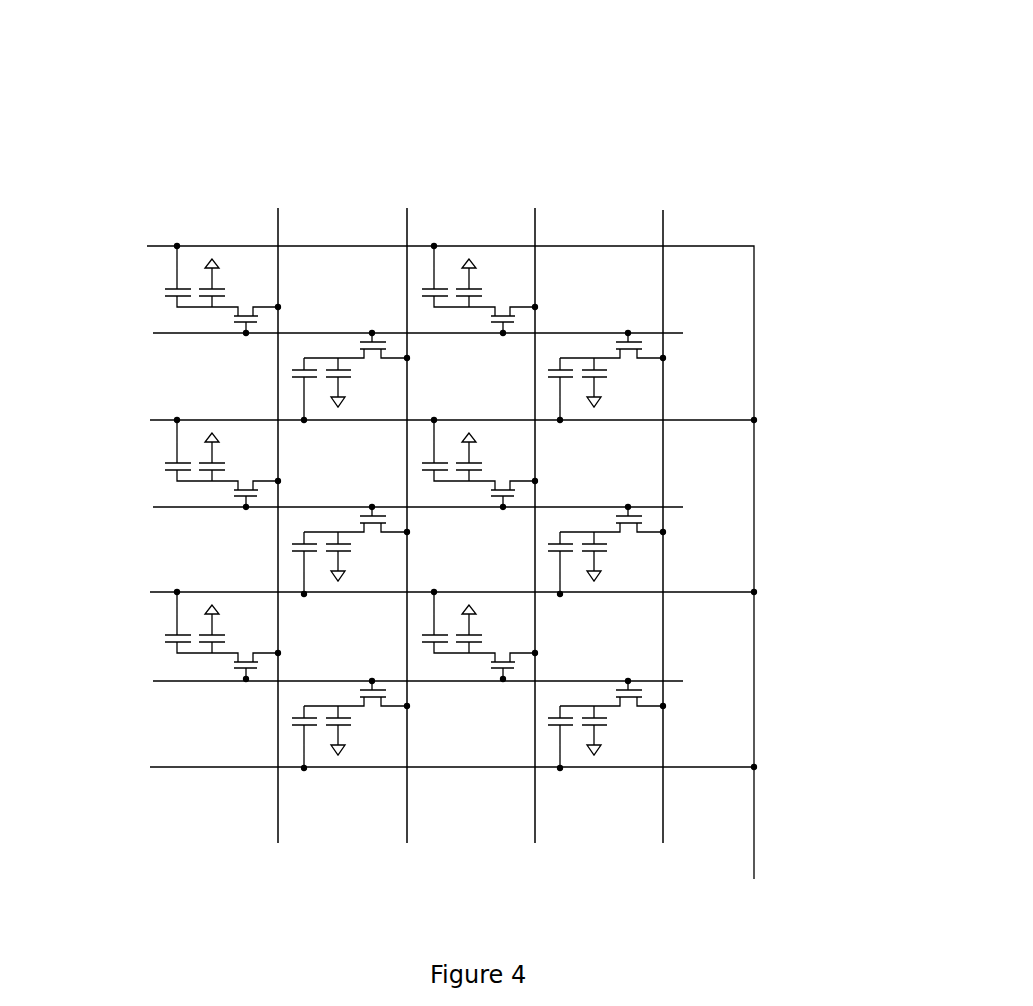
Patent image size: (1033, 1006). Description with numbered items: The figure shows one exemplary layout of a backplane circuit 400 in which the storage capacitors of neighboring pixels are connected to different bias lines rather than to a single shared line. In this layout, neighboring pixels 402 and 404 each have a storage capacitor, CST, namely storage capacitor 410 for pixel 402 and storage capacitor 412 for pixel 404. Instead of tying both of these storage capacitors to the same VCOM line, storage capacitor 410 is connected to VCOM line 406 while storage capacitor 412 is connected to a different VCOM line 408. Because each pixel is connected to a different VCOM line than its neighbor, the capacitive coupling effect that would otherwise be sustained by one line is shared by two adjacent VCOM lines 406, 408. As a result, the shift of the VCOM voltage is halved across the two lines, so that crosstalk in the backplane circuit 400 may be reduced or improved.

The backplane circuit 400 is at (768, 40).
The pixel 402 is at (245, 268).
The pixel 404 is at (323, 352).
The VCOM line 406 is at (718, 245).
The VCOM line 408 is at (722, 422).
The storage capacitor 410 is at (175, 292).
The storage capacitor 412 is at (293, 373).